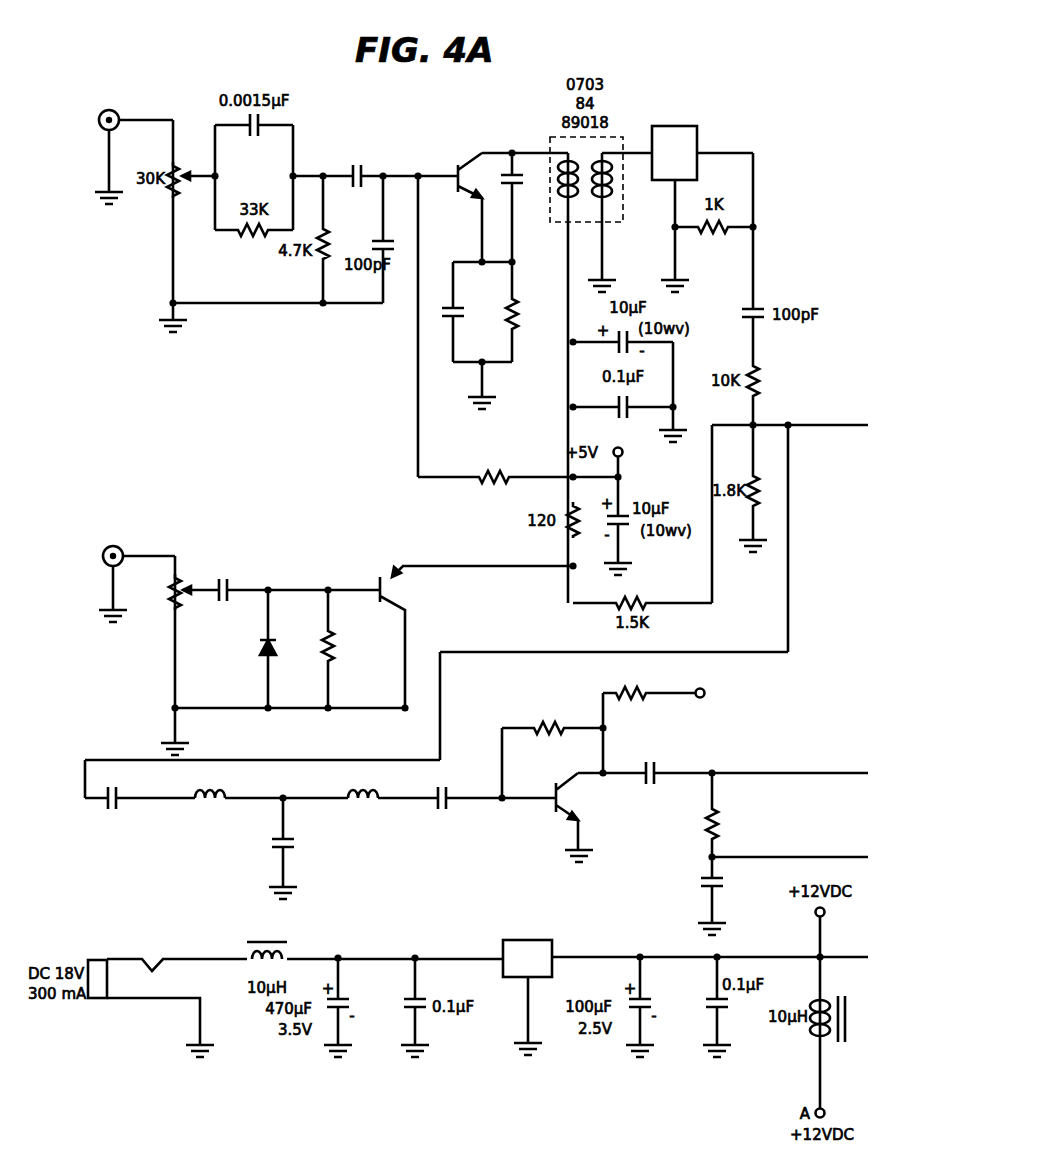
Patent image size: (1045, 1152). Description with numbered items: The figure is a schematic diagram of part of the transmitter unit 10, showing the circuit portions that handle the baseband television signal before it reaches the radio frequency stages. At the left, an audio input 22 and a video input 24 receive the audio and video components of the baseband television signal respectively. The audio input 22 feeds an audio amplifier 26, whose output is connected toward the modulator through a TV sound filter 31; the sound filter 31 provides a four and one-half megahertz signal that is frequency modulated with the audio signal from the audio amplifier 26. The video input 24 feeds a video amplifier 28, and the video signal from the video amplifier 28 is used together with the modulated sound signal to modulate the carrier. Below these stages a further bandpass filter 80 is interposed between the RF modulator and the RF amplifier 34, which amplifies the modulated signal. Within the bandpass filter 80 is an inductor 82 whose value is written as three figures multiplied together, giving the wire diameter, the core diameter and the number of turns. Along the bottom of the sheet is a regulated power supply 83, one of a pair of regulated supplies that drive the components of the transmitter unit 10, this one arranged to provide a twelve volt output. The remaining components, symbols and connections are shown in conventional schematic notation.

The transmitter unit 10 is at (147, 702).
The audio input 22 is at (112, 100).
The video input 24 is at (117, 545).
The audio amplifier 26 is at (395, 125).
The video amplifier 28 is at (333, 554).
The TV sound filter 31 is at (668, 126).
The RF amplifier 34 is at (548, 827).
The bandpass filter 80 is at (152, 863).
The inductor 82 is at (222, 789).
The regulated power supply 83 is at (518, 940).